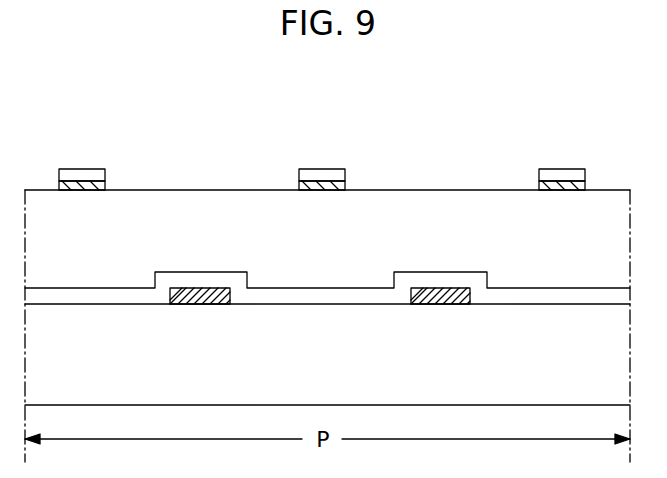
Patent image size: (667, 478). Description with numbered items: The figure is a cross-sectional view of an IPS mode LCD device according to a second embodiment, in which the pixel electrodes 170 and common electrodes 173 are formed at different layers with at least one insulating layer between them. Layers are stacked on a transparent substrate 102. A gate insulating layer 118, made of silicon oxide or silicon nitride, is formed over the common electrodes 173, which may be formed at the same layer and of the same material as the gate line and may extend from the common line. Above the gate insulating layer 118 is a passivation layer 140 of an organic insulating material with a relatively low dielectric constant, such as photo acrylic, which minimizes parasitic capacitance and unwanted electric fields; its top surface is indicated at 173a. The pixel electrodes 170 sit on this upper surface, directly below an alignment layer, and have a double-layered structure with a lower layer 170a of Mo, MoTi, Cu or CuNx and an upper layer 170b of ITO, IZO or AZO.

The transparent substrate 102 is at (580, 387).
The gate insulating layer 118 is at (320, 297).
The passivation layer 140 is at (368, 278).
The common electrode 173 is at (197, 290).
The planarization layer 173a is at (485, 110).
The pixel electrode 170 is at (344, 123).
The lower layer 170a is at (95, 186).
The upper layer 170b is at (73, 176).